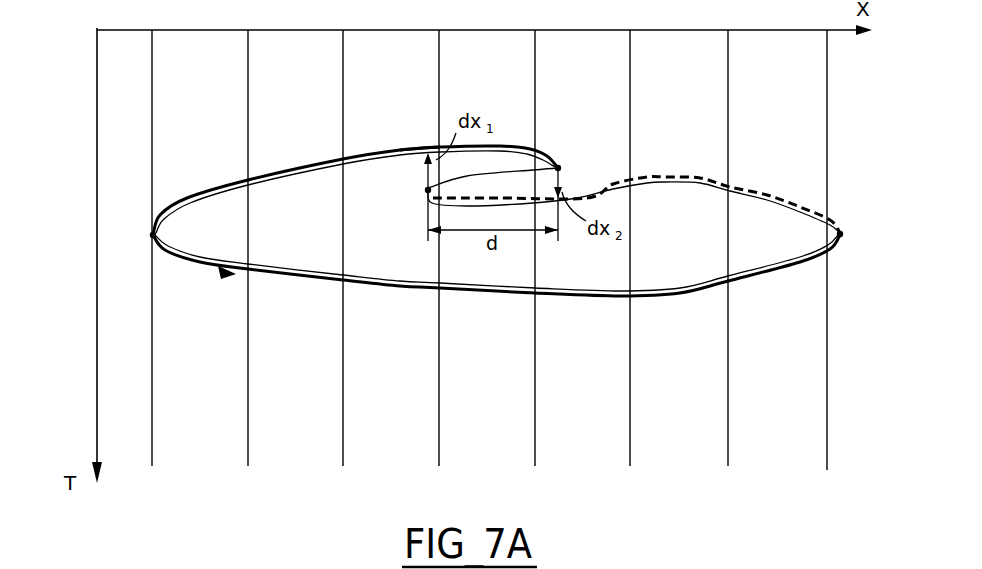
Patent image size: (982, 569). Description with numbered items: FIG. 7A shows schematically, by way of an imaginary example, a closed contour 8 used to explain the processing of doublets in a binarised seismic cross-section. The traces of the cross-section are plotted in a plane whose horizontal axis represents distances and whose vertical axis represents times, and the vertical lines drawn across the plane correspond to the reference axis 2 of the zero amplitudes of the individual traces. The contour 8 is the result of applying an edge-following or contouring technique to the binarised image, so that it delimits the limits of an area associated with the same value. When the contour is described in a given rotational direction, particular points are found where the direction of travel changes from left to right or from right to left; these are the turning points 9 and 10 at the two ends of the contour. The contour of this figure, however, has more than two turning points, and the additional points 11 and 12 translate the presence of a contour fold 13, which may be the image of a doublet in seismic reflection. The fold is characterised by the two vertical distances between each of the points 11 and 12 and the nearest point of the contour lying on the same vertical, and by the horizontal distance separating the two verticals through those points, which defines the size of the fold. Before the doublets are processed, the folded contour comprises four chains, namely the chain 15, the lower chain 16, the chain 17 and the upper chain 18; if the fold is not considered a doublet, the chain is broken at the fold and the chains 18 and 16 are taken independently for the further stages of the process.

The reference axis 2 is at (154, 114).
The contour 8 is at (268, 177).
The turning point 9 is at (151, 236).
The turning point 10 is at (841, 233).
The first transition point 11 is at (426, 191).
The second transition point 12 is at (579, 168).
The contour fold 13 is at (498, 150).
The chain 15 is at (488, 294).
The lower contour chain 16 is at (663, 175).
The chain 17 is at (485, 158).
The upper chain 18 is at (377, 152).